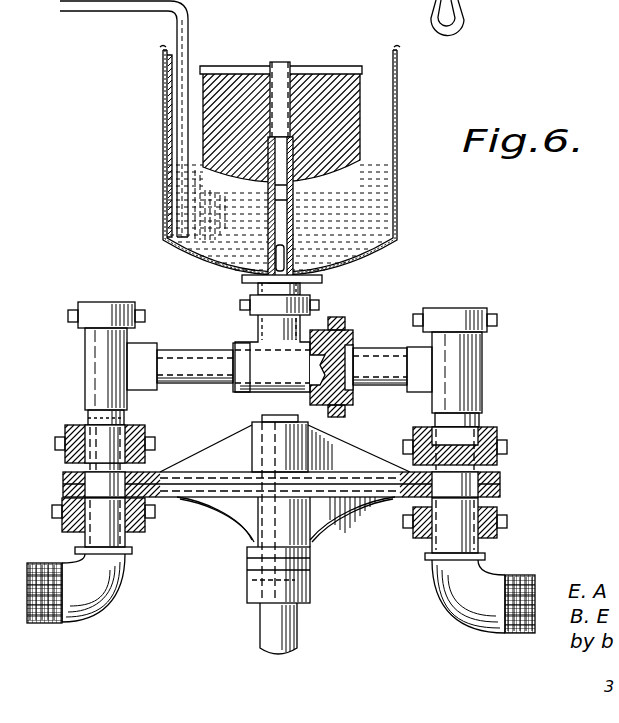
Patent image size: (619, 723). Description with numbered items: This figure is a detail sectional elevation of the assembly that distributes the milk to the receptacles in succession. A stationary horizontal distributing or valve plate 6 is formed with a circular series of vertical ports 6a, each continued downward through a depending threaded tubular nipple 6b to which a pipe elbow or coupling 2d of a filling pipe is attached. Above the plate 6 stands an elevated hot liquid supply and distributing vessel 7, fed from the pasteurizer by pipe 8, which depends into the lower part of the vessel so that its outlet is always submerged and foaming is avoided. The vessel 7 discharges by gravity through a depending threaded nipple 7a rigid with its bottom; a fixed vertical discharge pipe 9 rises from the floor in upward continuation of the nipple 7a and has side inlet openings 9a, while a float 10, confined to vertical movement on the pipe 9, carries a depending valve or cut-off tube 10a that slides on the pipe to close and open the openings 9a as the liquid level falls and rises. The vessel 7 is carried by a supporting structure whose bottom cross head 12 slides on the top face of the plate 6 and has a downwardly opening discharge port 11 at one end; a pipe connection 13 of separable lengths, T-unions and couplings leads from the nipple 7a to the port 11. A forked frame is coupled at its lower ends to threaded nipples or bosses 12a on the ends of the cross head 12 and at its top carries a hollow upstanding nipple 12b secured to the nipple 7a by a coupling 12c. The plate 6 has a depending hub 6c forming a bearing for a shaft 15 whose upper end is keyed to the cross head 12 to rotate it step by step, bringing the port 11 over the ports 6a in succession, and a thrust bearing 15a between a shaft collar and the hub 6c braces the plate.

The pipe elbow or coupling 2d is at (447, 588).
The distributing or valve plate 6 is at (182, 500).
The vertical ports 6a is at (530, 484).
The tubular nipples 6b is at (530, 507).
The central hub 6c is at (273, 527).
The hot liquid supply and distributing vessel 7 is at (397, 122).
The discharge nipple 7a is at (320, 280).
The supply pipe 8 is at (176, 33).
The discharge pipe 9 is at (290, 203).
The side inlet openings 9a is at (283, 253).
The float 10 is at (365, 107).
The valve or cut-off tube 10a is at (176, 208).
The liquid discharge port 11 is at (65, 462).
The cross head 12 is at (355, 462).
The threaded nipples or bosses 12a is at (527, 452).
The hollow upstanding nipple 12b is at (258, 327).
The coupling 12c is at (319, 305).
The pipe connection 13 is at (183, 388).
The shaft 15 is at (283, 630).
The thrust bearing 15a is at (310, 555).